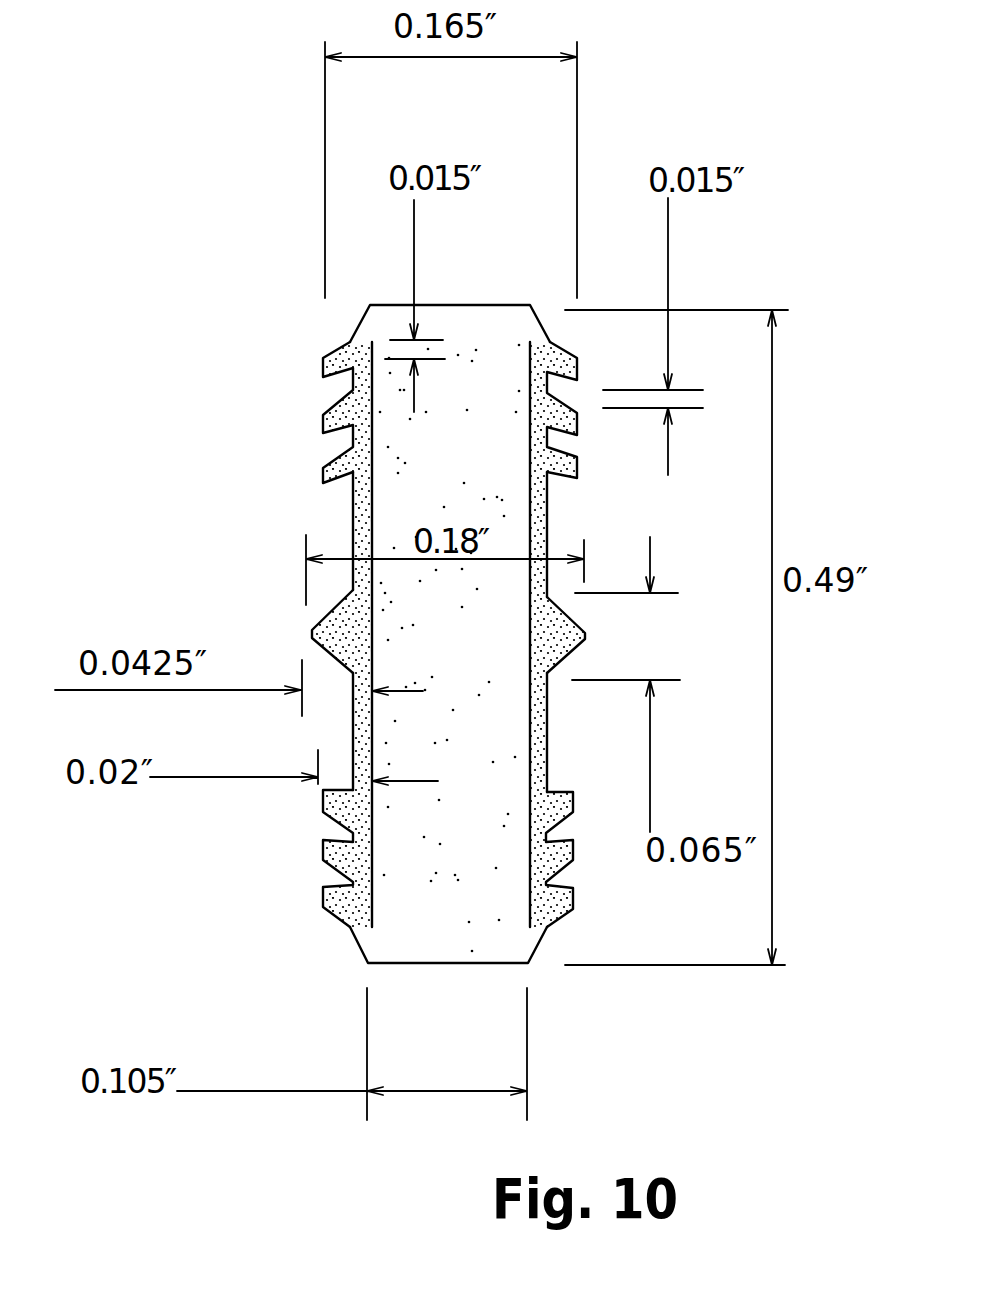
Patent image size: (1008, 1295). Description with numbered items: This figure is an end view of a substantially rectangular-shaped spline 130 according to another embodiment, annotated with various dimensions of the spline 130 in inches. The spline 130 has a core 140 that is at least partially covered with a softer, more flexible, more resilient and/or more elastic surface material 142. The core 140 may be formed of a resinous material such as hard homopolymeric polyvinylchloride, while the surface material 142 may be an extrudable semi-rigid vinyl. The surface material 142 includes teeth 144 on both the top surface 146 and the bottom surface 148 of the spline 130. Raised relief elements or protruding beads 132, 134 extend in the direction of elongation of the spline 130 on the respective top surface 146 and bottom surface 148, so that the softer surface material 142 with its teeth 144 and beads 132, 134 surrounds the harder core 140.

The spline 130 is at (480, 745).
The protruding bead 132 is at (585, 637).
The protruding bead 134 is at (310, 627).
The core 140 is at (530, 963).
The surface material 142 is at (323, 460).
The teeth 144 is at (322, 890).
The top surface 146 is at (548, 767).
The bottom surface 148 is at (350, 722).